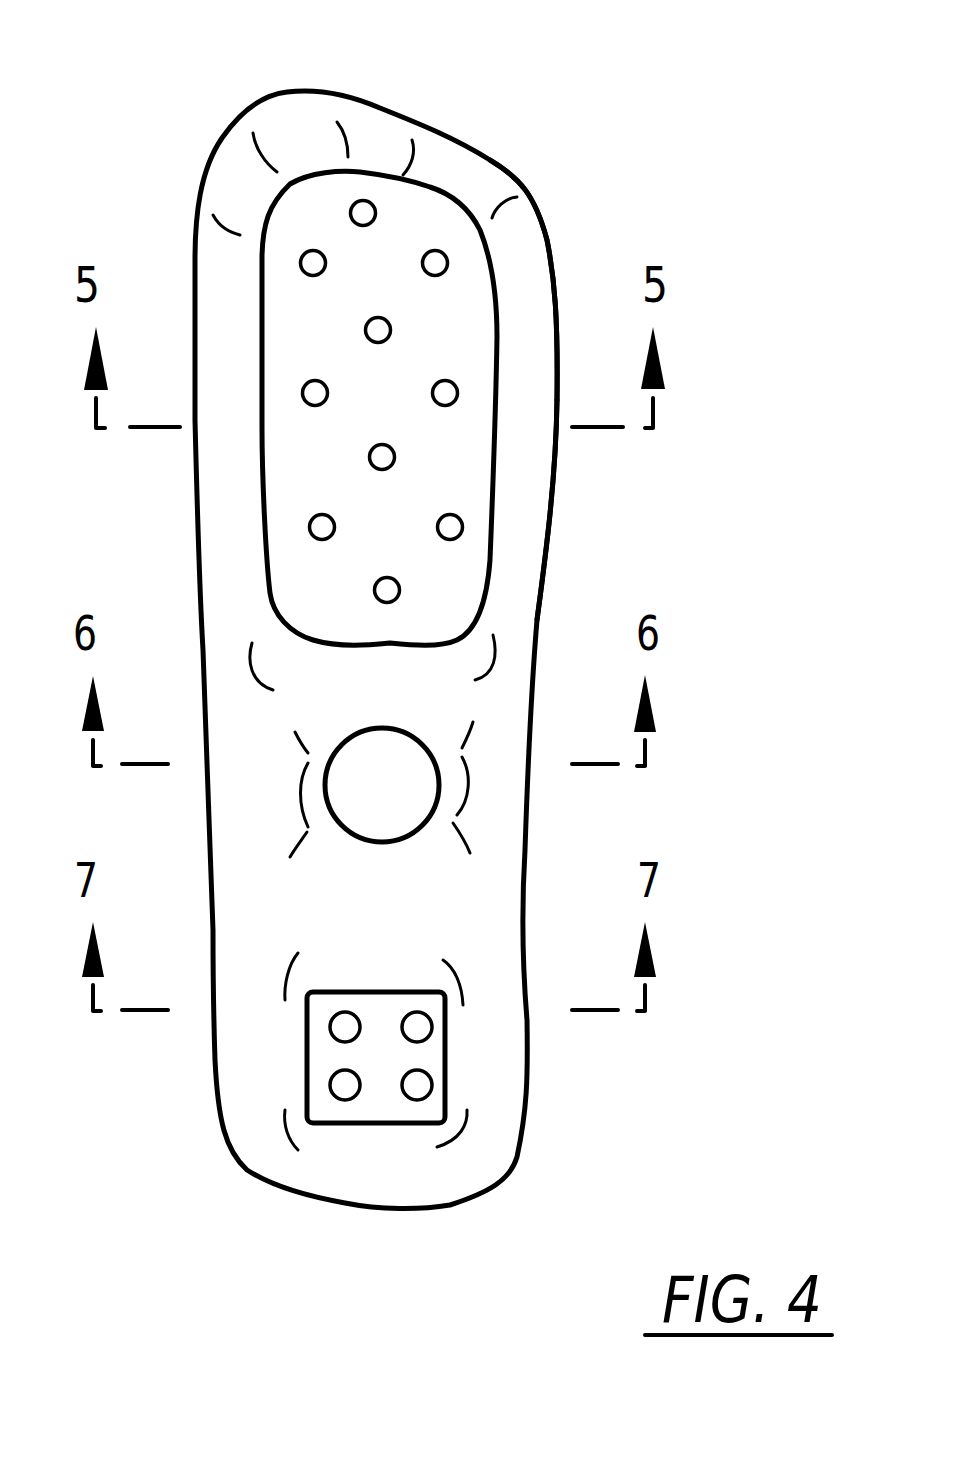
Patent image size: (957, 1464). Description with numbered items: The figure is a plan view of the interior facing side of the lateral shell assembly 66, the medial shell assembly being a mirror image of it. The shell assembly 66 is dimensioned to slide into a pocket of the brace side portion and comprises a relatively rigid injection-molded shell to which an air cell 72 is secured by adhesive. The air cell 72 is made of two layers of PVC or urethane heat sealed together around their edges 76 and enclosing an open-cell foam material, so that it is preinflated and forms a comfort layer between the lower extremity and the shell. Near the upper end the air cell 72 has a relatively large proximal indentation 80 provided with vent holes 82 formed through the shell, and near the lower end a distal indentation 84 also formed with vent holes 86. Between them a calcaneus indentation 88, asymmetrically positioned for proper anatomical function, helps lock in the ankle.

The shell assembly 66 is at (583, 123).
The air cell 72 is at (517, 520).
The edges 76 is at (547, 259).
The proximal indentation 80 is at (293, 215).
The vent holes 82 is at (435, 261).
The distal indentation 84 is at (317, 1060).
The vent holes 86 is at (415, 1092).
The calcaneus indentation 88 is at (412, 765).